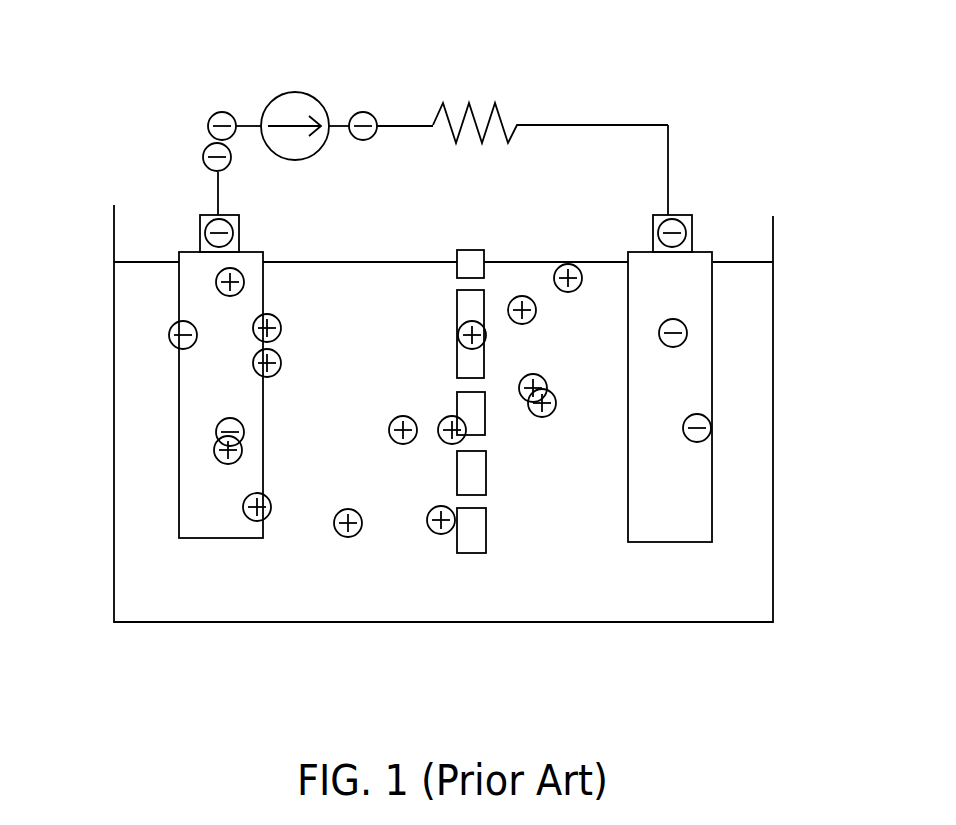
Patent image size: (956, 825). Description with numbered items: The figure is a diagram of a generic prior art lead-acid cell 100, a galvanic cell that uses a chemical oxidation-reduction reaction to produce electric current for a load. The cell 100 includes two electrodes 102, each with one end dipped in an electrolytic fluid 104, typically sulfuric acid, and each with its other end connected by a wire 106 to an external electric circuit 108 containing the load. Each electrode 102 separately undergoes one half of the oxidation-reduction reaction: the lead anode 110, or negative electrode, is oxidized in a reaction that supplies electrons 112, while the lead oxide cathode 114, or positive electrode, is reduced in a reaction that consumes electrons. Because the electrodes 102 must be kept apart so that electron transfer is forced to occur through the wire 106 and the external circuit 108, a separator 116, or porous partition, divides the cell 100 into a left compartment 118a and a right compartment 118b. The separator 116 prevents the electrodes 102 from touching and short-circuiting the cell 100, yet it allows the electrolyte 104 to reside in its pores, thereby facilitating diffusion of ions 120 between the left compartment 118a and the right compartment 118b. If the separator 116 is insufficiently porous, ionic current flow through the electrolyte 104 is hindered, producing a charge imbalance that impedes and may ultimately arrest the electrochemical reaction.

The lead-acid cell 100 is at (190, 650).
The electrodes 102 is at (217, 482).
The electrolytic fluid 104 is at (618, 587).
The wire 106 is at (217, 185).
The external electric circuit 108 is at (328, 70).
The lead anode 110 is at (693, 500).
The electrons 112 is at (700, 415).
The lead oxide cathode 114 is at (210, 377).
The separator 116 is at (462, 467).
The left compartment 118a is at (274, 640).
The right compartment 118b is at (584, 640).
The ions 120 is at (402, 416).